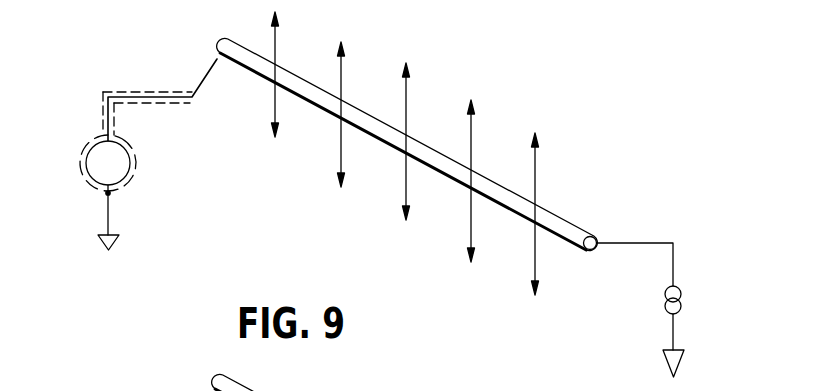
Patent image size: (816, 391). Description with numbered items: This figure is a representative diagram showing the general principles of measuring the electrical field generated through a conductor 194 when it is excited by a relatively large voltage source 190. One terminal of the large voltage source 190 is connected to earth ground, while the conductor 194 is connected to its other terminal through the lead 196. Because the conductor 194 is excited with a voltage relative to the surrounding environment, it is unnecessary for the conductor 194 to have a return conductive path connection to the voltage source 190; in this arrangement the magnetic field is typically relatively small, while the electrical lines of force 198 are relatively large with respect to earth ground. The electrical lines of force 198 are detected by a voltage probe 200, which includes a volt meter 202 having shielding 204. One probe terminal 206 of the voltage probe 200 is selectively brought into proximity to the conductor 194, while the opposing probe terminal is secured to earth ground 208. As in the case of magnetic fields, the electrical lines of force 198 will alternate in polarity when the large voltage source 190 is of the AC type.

The large voltage source 190 is at (683, 302).
The conductor 194 is at (560, 216).
The lead 196 is at (648, 242).
The electrical lines of force 198 is at (342, 83).
The voltage probe 200 is at (82, 96).
The volt meter 202 is at (130, 177).
The shielding 204 is at (136, 157).
The probe terminal 206 is at (205, 82).
The earth ground 208 is at (118, 242).